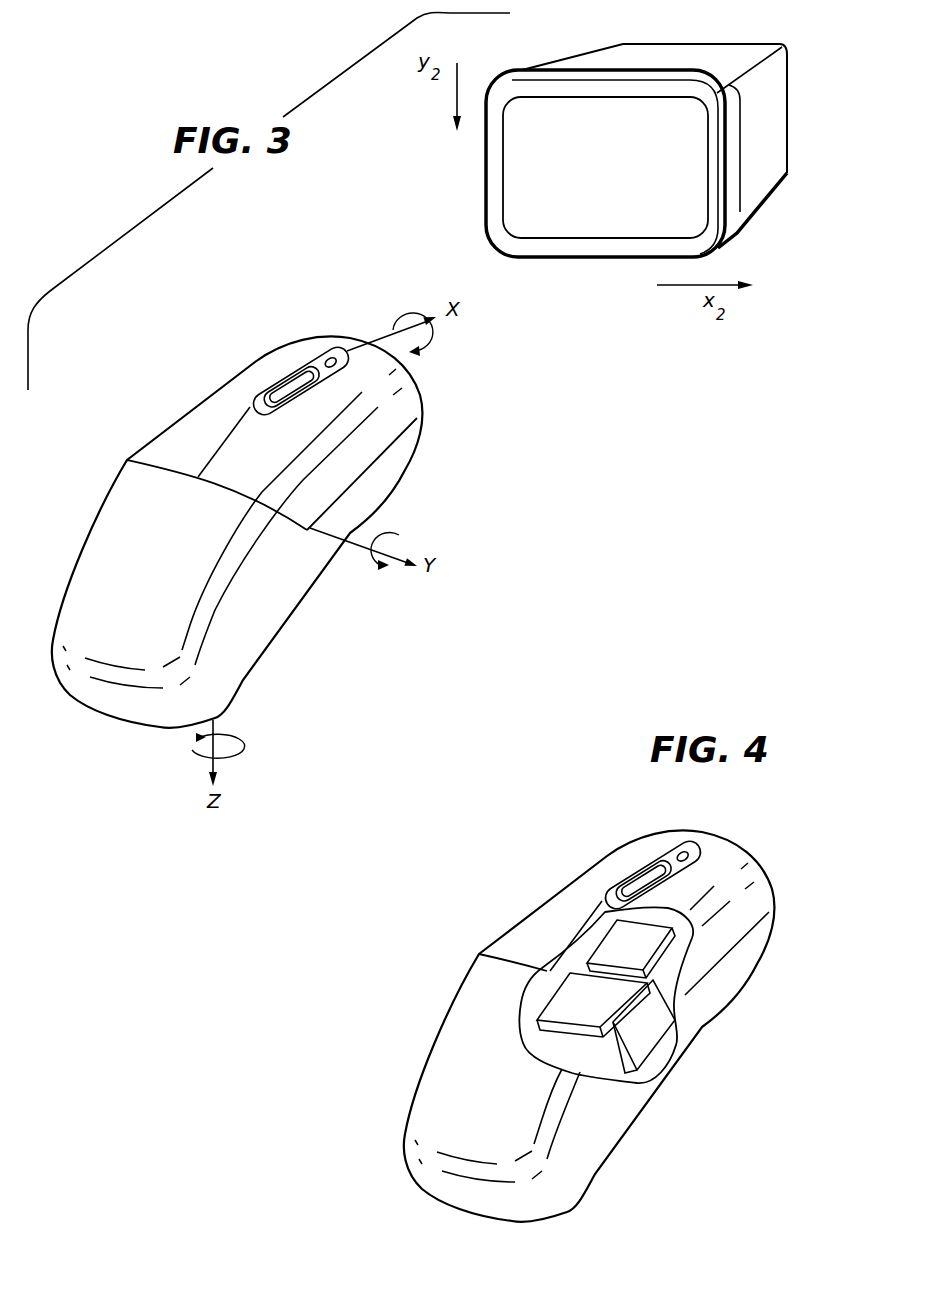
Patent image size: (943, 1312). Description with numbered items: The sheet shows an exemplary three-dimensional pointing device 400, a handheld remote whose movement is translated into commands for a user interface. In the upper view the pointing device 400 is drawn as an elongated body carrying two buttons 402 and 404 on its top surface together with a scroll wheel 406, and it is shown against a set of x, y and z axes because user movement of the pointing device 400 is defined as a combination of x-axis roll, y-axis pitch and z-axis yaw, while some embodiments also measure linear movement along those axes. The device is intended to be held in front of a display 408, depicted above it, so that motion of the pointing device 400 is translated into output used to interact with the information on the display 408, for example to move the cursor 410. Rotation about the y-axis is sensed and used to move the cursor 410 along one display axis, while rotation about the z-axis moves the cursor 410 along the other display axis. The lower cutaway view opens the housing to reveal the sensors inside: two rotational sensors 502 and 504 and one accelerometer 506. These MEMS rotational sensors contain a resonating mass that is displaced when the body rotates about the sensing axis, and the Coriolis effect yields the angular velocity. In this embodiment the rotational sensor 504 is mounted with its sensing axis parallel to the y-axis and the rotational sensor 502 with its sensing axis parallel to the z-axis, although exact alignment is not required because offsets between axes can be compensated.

In FIG. 3, the 3D pointing device 400 is at (137, 297).
In FIG. 4, the 3D pointing device 400 is at (589, 1014).
In FIG. 3, the button 402 is at (205, 411).
In FIG. 4, the button 402 is at (529, 922).
In FIG. 3, the button 404 is at (363, 437).
In FIG. 3, the scroll wheel 406 is at (290, 385).
In FIG. 4, the scroll wheel 406 is at (629, 860).
In FIG. 3, the display 408 is at (728, 142).
In FIG. 3, the cursor 410 is at (652, 162).
In FIG. 4, the rotational sensor 502 is at (704, 971).
In FIG. 4, the rotational sensor 504 is at (689, 1041).
In FIG. 4, the accelerometer 506 is at (511, 1002).